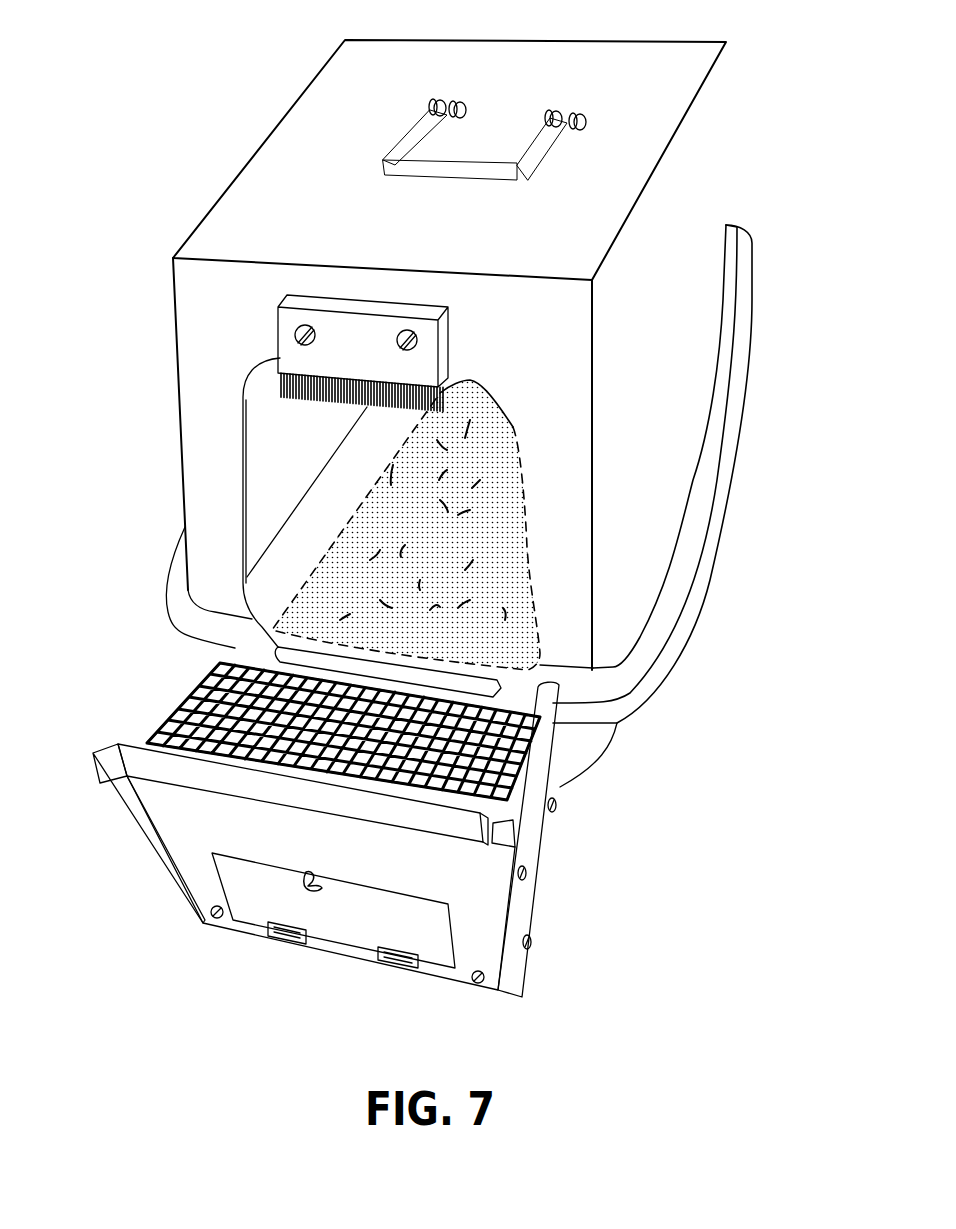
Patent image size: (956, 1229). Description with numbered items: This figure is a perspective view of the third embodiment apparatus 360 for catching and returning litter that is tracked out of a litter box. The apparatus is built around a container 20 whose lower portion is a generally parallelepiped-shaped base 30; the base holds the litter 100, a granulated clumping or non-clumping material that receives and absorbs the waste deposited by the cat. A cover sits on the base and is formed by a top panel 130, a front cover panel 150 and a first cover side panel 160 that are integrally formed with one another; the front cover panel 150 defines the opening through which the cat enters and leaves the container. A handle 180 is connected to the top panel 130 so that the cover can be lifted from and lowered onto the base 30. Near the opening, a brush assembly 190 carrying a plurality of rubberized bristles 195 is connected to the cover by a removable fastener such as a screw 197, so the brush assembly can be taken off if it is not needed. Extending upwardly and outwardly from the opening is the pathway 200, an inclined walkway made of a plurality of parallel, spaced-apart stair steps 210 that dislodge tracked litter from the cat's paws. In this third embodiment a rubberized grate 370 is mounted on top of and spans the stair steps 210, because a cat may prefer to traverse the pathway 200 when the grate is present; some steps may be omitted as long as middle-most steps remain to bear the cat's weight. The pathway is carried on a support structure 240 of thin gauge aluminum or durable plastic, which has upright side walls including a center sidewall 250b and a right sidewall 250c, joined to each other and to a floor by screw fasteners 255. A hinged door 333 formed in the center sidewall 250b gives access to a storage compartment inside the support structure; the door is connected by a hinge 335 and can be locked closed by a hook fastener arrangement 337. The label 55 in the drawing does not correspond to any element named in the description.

The container 20 is at (441, 527).
The base 30 is at (613, 752).
The cabinet opening 55 is at (500, 452).
The litter 100 is at (375, 523).
The top panel 130 is at (287, 153).
The front cover panel 150 is at (548, 475).
The first cover side panel 160 is at (710, 117).
The handle 180 is at (542, 150).
The brush assembly 190 is at (379, 353).
The rubberized bristles 195 is at (450, 380).
The screw 197 is at (297, 335).
The pathway 200 is at (297, 703).
The stair steps 210 is at (175, 720).
The support structure 240 is at (360, 863).
The center sidewall 250b is at (235, 922).
The right sidewall 250c is at (548, 840).
The screw fastener 255 is at (528, 946).
The hinged door 333 is at (322, 920).
The hinge 335 is at (403, 962).
The hook fastener arrangement 337 is at (330, 884).
The third embodiment apparatus 360 is at (449, 145).
The grate 370 is at (215, 672).